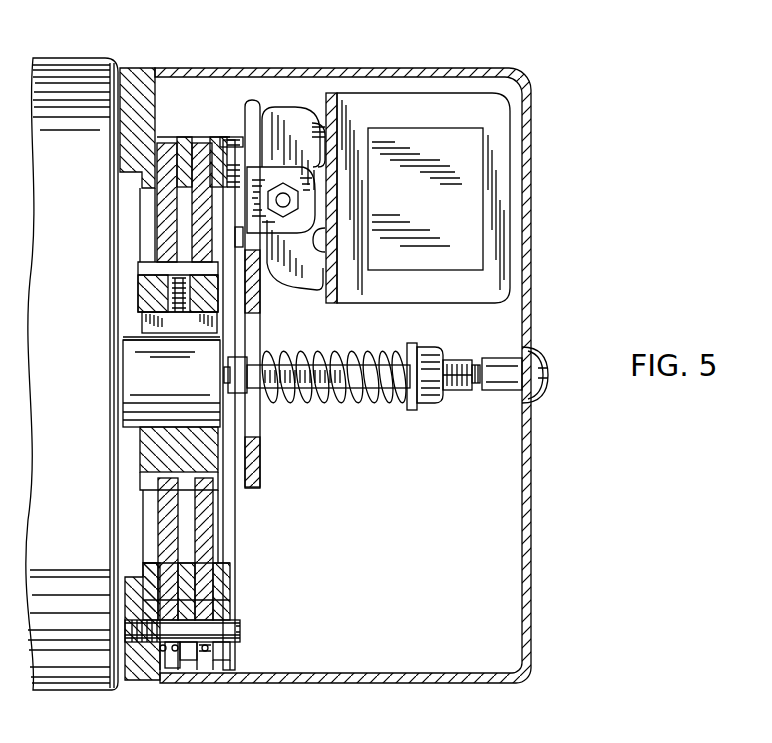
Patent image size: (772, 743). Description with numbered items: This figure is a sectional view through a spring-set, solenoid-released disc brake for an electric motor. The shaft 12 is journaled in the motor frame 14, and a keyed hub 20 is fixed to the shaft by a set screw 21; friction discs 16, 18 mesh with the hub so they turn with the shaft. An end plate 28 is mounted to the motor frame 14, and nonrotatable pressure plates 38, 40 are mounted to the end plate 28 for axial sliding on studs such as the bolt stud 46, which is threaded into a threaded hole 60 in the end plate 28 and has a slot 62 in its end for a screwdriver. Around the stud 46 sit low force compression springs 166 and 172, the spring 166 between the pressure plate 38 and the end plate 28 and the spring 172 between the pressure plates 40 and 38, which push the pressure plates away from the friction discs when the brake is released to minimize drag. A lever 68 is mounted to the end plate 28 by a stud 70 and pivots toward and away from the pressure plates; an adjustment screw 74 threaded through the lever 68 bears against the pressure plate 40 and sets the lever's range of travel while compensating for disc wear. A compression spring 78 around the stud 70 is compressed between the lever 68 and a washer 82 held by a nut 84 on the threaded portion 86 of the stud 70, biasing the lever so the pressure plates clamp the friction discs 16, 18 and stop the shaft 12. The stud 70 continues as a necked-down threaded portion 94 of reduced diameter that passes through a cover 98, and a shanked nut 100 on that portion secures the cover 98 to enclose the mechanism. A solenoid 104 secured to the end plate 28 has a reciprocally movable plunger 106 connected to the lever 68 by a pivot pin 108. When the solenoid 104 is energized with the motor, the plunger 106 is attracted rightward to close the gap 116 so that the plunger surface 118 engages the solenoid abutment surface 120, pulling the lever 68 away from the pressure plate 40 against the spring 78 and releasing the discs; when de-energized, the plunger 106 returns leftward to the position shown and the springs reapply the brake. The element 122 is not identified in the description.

The motor frame 14 is at (81, 67).
The end plate 28 is at (140, 72).
The lever plate 122 is at (235, 138).
The plunger 106 is at (302, 112).
The pivot pin 108 is at (283, 190).
The solenoid 104 is at (425, 136).
The cover 98 is at (532, 262).
The solenoid abutment surface 120 is at (325, 254).
The plunger surface 118 is at (322, 296).
The gap 116 is at (323, 304).
The set screw 21 is at (175, 295).
The shaft 12 is at (137, 373).
The keyed hub 20 is at (150, 446).
The friction disc 16 is at (166, 540).
The friction disc 18 is at (205, 542).
The stud 46 is at (233, 620).
The slot 62 is at (243, 632).
The threaded hole 60 is at (152, 643).
The compression spring 166 is at (172, 662).
The pressure plate 38 is at (188, 660).
The compression spring 172 is at (208, 662).
The pressure plate 40 is at (222, 663).
The lever 68 is at (259, 446).
The adjustment screw 74 is at (293, 402).
The stud 70 is at (370, 404).
The compression spring 78 is at (379, 405).
The washer 82 is at (411, 413).
The nut 84 is at (430, 404).
The threaded portion 86 is at (459, 360).
The necked-down threaded portion 94 is at (478, 362).
The shanked nut 100 is at (545, 360).